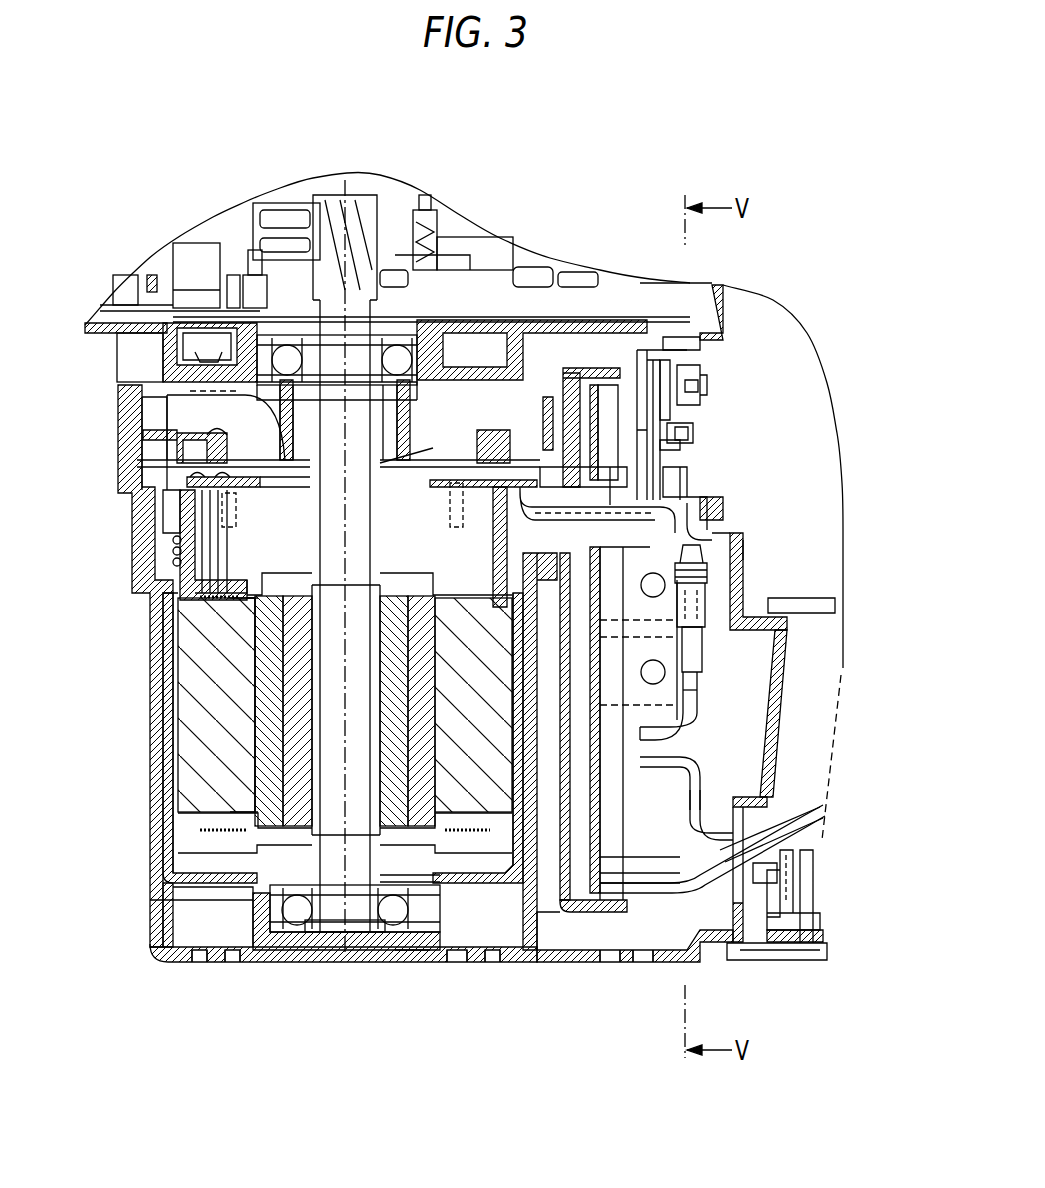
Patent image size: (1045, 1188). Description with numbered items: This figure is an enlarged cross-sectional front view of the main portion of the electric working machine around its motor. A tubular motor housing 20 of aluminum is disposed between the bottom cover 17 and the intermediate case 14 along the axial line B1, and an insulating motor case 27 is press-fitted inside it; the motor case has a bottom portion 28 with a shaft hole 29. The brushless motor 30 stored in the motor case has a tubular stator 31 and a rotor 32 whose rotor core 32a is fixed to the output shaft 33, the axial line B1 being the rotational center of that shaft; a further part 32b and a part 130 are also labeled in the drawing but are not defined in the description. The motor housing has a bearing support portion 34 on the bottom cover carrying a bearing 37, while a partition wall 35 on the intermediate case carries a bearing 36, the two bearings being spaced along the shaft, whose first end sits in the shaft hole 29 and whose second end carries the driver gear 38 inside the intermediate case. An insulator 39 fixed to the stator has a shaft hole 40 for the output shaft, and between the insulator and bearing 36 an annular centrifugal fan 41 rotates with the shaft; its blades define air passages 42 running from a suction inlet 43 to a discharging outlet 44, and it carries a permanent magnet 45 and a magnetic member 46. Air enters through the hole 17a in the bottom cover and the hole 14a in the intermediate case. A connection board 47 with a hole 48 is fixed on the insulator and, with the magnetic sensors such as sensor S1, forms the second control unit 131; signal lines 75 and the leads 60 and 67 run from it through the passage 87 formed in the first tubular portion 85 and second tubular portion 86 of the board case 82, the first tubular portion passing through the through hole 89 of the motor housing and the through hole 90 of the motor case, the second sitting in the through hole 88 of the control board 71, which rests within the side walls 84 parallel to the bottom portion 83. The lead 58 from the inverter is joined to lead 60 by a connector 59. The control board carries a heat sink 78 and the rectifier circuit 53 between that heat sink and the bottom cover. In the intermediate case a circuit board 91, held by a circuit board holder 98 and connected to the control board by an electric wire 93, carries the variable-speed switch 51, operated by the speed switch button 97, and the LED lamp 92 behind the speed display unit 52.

The intermediate case 14 is at (580, 1000).
The hole 14a is at (648, 990).
The bottom cover 17 is at (413, 963).
The hole 17a is at (472, 990).
The motor housing 20 is at (150, 735).
The motor case 27 is at (183, 900).
The bottom portion 28 is at (445, 882).
The shaft hole 29 is at (263, 873).
The brushless motor 30 is at (203, 863).
The stator 31 is at (190, 708).
The rotor 32 is at (393, 882).
The rotor core 32a is at (257, 671).
The stator tooth 32b is at (263, 777).
The output shaft 33 is at (327, 805).
The bearing support portion 34 is at (273, 945).
The partition wall 35 is at (113, 317).
The bearing 36 is at (273, 343).
The bearing 37 is at (313, 925).
The driver gear 38 is at (335, 210).
The insulator 39 is at (275, 625).
The shaft hole 40 is at (405, 593).
The fan 41 is at (163, 408).
The air passages 42 is at (233, 423).
The suction inlet 43 is at (385, 548).
The discharging outlet 44 is at (512, 403).
The permanent magnet 45 is at (187, 497).
The magnetic member 46 is at (488, 450).
The connection board 47 is at (283, 487).
The hole 48 is at (400, 497).
The variable-speed switch 51 is at (668, 387).
The speed display unit 52 is at (695, 432).
The rectifier circuit 53 is at (657, 893).
The lead 58 is at (695, 737).
The connector 59 is at (690, 692).
The lead 60 is at (713, 530).
The lead 67 is at (695, 653).
The control board 71 is at (583, 873).
The signal lines 75 is at (680, 567).
The heat sink 78 is at (663, 780).
The board case 82 is at (553, 917).
The bottom portion 83 is at (787, 840).
The side walls 84 is at (590, 910).
The first tubular portion 85 is at (553, 460).
The second tubular portion 86 is at (605, 470).
The passage 87 is at (580, 497).
The through hole 88 is at (780, 600).
The through hole 89 is at (568, 480).
The through hole 90 is at (545, 455).
The circuit board 91 is at (660, 418).
The LED lamp 92 is at (680, 438).
The electric wire 93 is at (690, 482).
The speed switch button 97 is at (698, 377).
The circuit board holder 98 is at (653, 353).
The inclined wall 130 is at (767, 743).
The second control unit 131 is at (243, 497).
The axial line B1 is at (347, 912).
The magnetic sensor S1 is at (262, 573).